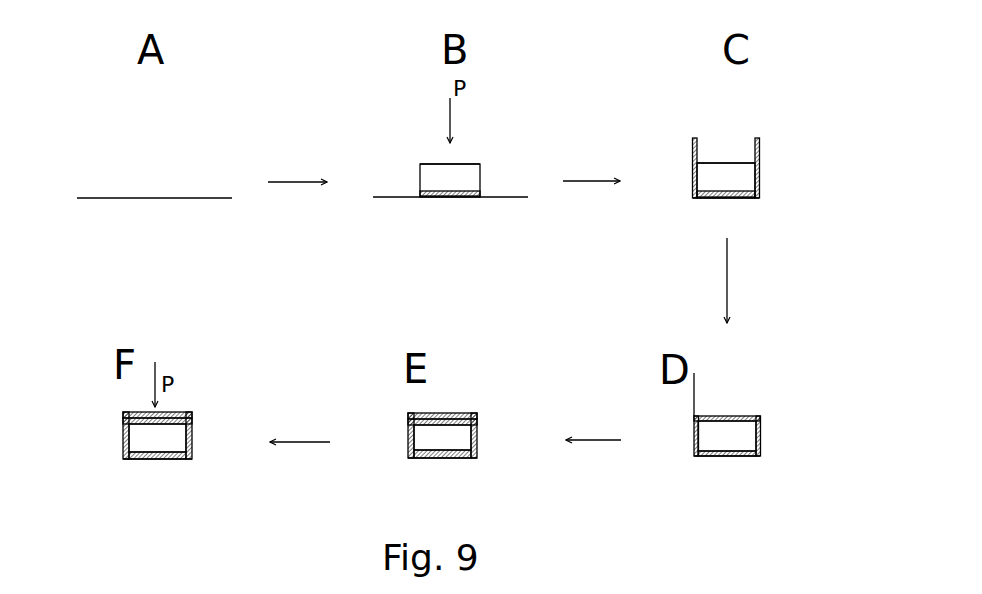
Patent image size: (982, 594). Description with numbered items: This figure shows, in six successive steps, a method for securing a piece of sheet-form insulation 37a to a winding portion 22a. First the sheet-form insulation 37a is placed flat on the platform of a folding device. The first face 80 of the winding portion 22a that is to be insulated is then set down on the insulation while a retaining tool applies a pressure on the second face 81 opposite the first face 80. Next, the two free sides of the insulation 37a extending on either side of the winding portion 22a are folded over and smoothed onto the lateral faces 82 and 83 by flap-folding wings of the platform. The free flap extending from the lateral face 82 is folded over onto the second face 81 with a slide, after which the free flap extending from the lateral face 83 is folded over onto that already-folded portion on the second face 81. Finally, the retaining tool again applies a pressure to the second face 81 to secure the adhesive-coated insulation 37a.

The sheet-form insulation 37a is at (147, 198).
The winding portion 22a is at (465, 175).
The first face 80 is at (439, 198).
The second face 81 is at (428, 163).
The lateral face 82 is at (760, 167).
The lateral face 83 is at (692, 182).